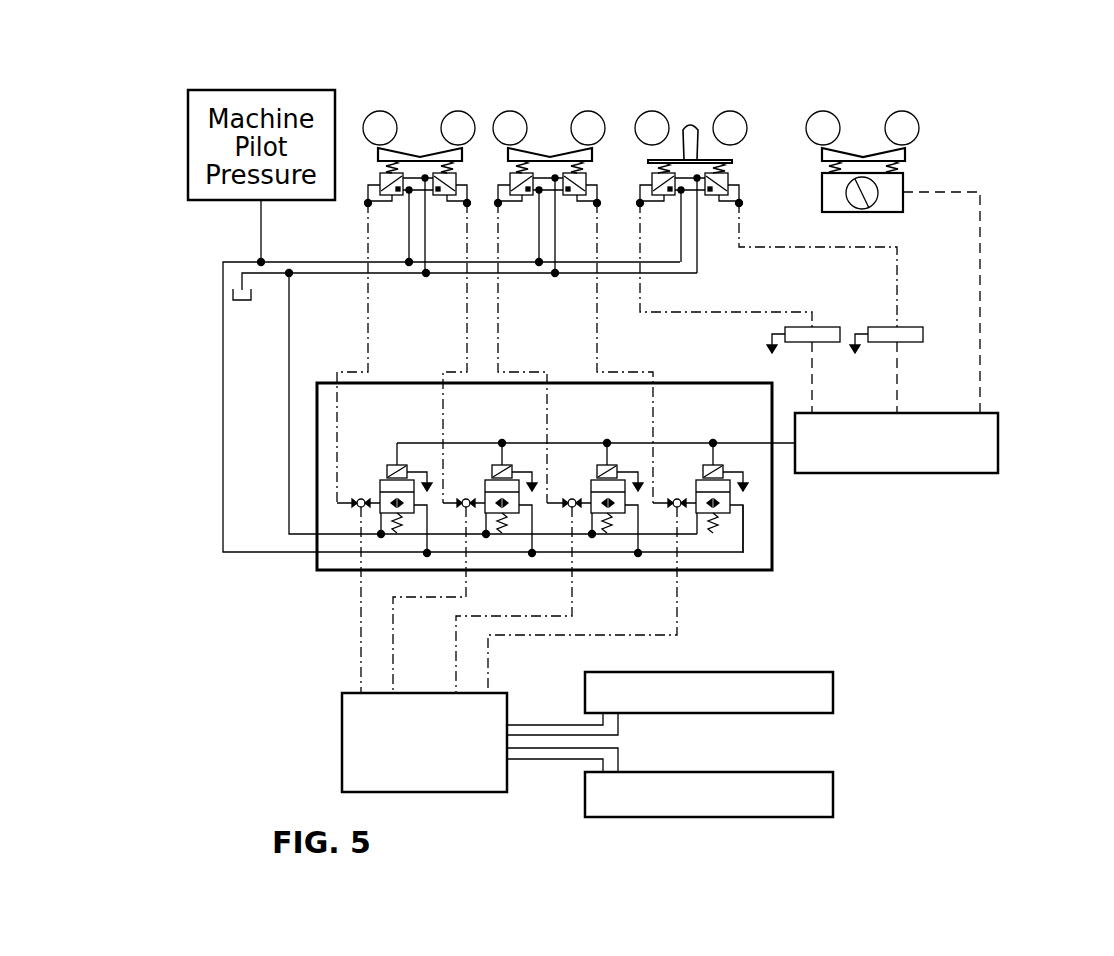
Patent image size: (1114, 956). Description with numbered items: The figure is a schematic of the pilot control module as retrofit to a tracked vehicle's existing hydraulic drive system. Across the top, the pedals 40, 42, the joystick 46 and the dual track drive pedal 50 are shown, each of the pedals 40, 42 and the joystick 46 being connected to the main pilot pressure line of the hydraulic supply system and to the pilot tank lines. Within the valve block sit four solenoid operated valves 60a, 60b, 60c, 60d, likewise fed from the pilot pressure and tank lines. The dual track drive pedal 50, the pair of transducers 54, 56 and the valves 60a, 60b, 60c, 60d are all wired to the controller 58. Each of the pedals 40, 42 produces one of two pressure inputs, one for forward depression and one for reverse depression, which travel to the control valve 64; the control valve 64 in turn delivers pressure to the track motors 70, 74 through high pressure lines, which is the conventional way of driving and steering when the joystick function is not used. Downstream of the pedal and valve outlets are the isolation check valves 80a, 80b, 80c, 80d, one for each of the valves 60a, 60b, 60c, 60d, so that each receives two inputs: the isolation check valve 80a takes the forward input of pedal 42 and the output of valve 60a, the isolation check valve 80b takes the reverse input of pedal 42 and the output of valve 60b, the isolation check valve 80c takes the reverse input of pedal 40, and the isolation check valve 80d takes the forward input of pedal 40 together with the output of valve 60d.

The pedal 40 is at (418, 155).
The pedal 42 is at (548, 155).
The joystick 46 is at (681, 143).
The dual track drive pedal 50 is at (862, 152).
The transducer 54 is at (925, 335).
The transducer 56 is at (841, 335).
The controller 58 is at (998, 420).
The solenoid operated valve 60a is at (590, 478).
The solenoid operated valve 60b is at (695, 478).
The solenoid operated valve 60c is at (485, 478).
The solenoid operated valve 60d is at (380, 478).
The control valve 64 is at (342, 703).
The track motor 70 is at (833, 676).
The track motor 74 is at (833, 778).
The isolation check valve 80a is at (568, 503).
The isolation check valve 80b is at (673, 503).
The isolation check valve 80c is at (462, 503).
The isolation check valve 80d is at (357, 503).